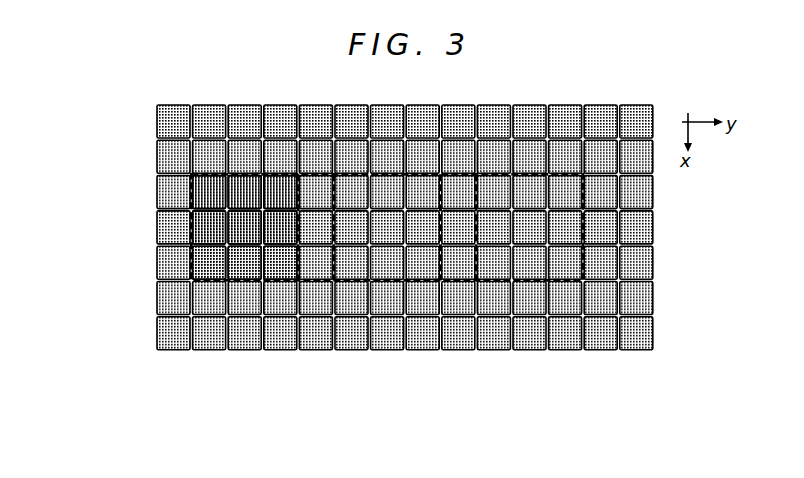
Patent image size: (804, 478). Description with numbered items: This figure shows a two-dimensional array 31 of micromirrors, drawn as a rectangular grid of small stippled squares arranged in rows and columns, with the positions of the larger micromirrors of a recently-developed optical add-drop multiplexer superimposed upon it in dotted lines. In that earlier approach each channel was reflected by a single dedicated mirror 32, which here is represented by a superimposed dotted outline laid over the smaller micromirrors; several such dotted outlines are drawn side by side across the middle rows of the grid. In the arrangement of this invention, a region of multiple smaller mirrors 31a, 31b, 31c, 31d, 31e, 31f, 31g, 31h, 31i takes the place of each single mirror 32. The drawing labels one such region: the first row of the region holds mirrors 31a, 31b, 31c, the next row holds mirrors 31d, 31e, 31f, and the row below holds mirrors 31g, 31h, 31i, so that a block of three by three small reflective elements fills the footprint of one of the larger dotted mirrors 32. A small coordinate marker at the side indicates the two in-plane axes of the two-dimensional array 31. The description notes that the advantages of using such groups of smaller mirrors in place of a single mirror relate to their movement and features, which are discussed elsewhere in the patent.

The two-dimensional array 31 is at (336, 210).
The mirror 31a is at (208, 187).
The mirror 31b is at (246, 187).
The mirror 31c is at (281, 187).
The mirror 31d is at (203, 215).
The mirror 31e is at (240, 225).
The mirror 31f is at (278, 236).
The mirror 31g is at (203, 253).
The mirror 31h is at (240, 262).
The mirror 31i is at (278, 270).
The single mirror 32 is at (522, 286).